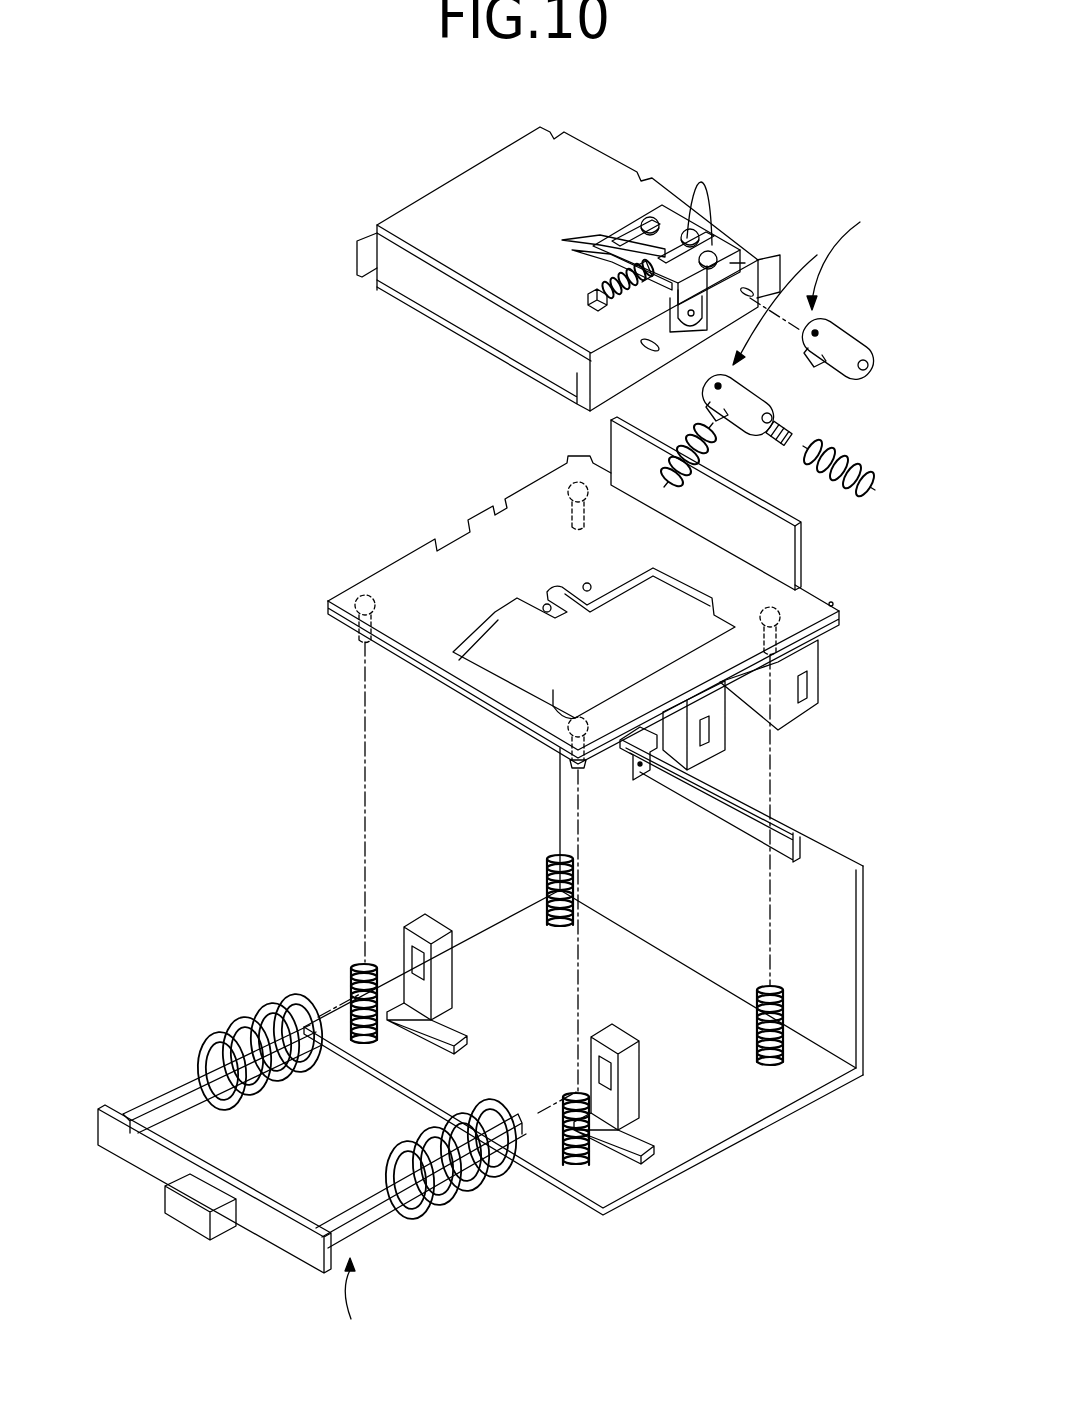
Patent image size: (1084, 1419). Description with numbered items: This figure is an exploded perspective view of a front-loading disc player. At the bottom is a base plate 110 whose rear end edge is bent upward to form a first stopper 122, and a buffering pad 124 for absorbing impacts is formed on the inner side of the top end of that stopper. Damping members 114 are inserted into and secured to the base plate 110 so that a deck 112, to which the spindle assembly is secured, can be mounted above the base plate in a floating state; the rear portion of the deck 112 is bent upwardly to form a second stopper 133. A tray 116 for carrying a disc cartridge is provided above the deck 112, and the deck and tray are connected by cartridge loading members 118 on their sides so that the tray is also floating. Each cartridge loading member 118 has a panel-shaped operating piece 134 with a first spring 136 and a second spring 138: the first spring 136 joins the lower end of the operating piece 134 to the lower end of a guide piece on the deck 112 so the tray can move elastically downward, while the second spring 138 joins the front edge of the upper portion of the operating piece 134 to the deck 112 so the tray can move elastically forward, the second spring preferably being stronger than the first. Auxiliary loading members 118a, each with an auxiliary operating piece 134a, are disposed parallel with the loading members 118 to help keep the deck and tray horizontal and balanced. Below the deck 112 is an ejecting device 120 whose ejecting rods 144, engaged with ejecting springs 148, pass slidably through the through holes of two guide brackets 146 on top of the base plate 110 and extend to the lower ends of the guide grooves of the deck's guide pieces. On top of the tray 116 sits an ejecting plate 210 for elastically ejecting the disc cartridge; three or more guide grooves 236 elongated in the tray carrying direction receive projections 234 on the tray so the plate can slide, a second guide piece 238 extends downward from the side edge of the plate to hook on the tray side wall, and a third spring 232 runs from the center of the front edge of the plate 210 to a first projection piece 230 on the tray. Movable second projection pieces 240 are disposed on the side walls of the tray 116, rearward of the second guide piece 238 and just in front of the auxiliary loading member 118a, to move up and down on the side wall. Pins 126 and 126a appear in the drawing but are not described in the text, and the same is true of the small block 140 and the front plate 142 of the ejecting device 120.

The base plate 110 is at (695, 1122).
The deck 112 is at (415, 573).
The damping members 114 is at (772, 1066).
The tray 116 is at (445, 197).
The cartridge loading members 118 is at (785, 297).
The auxiliary loading members 118a is at (865, 258).
The ejecting device 120 is at (356, 1307).
The first stopper 122 is at (825, 968).
The buffering pad 124 is at (797, 848).
The pin 126 is at (677, 357).
The pin 126a is at (750, 290).
The second stopper 133 is at (770, 543).
The operating piece 134 is at (760, 400).
The auxiliary operating piece 134a is at (847, 348).
The first spring 136 is at (850, 473).
The second spring 138 is at (670, 447).
The block 140 is at (173, 1203).
The front plate 142 is at (261, 1227).
The ejecting rods 144 is at (370, 1218).
The guide brackets 146 is at (610, 1131).
The ejecting springs 148 is at (496, 1176).
The ejecting plate 210 is at (630, 227).
The first projection piece 230 is at (597, 292).
The third spring 232 is at (613, 270).
The projections 234 is at (694, 200).
The guide grooves 236 is at (617, 257).
The second guide piece 238 is at (672, 320).
The movable second projection pieces 240 is at (737, 263).